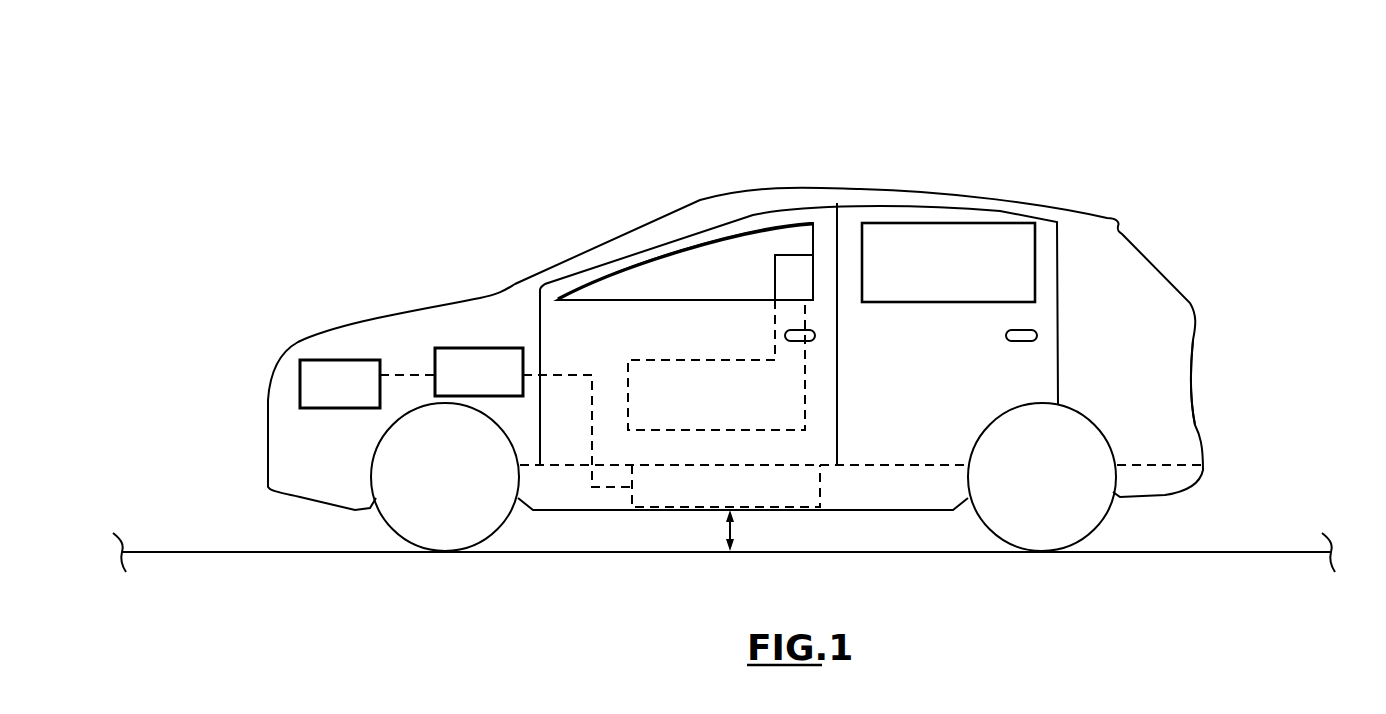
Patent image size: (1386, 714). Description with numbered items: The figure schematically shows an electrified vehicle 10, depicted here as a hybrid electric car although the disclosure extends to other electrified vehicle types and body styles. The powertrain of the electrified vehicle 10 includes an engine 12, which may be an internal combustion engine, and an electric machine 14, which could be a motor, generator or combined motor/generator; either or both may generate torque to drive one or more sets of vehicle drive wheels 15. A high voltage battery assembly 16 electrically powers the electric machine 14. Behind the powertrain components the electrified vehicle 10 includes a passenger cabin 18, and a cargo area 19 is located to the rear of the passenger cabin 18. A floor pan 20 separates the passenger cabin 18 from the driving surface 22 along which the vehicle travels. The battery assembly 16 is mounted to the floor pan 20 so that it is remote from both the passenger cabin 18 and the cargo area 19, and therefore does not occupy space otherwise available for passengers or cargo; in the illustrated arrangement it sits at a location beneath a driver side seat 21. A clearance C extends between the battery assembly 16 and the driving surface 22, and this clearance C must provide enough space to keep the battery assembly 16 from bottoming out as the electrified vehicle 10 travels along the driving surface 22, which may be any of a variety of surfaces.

The electrified vehicle 10 is at (760, 115).
The engine 12 is at (333, 378).
The electric machine 14 is at (465, 355).
The vehicle drive wheels 15 is at (450, 515).
The high voltage battery assembly 16 is at (800, 492).
The passenger cabin 18 is at (760, 268).
The cargo area 19 is at (1132, 305).
The floor pan 20 is at (890, 465).
The driver side seat 21 is at (691, 378).
The driving surface 22 is at (636, 553).
The clearance C is at (730, 548).